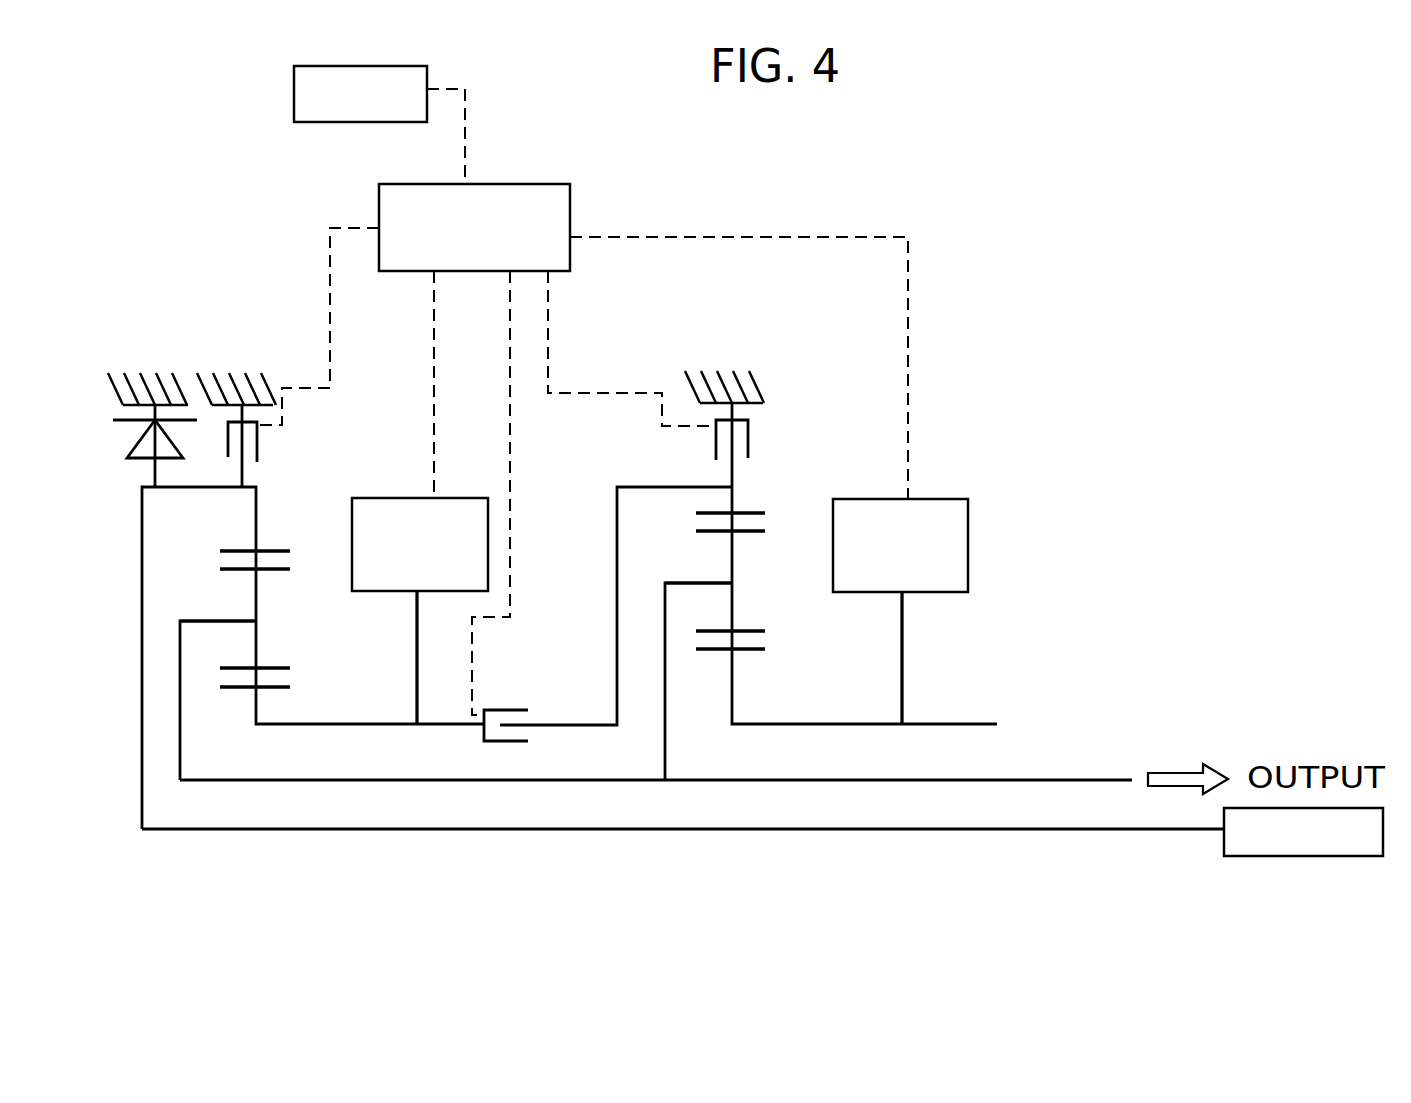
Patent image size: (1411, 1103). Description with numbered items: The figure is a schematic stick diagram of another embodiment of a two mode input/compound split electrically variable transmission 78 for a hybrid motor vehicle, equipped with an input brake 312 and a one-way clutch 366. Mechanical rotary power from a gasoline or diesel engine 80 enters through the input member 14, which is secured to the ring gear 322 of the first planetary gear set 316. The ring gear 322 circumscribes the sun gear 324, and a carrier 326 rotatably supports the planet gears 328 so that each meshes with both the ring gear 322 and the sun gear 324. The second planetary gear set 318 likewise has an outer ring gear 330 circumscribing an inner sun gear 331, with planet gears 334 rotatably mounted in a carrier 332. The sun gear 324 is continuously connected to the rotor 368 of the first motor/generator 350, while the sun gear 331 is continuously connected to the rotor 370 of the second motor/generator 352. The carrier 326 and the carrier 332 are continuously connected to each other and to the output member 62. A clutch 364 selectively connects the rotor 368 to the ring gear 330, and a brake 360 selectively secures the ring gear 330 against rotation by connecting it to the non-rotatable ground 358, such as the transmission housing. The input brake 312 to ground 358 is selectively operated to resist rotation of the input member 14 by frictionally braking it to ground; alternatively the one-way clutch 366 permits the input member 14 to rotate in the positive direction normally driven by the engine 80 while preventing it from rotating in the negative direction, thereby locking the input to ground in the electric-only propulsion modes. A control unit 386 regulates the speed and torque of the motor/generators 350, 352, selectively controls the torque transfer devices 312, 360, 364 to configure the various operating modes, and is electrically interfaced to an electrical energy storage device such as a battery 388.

The input member 14 is at (943, 830).
The output member 62 is at (1062, 779).
The electrically variable transmission 78 is at (1048, 178).
The engine 80 is at (1308, 856).
The input brake 312 is at (260, 452).
The first planetary gear set 316 is at (312, 548).
The second planetary gear set 318 is at (806, 628).
The ring gear 322 is at (262, 548).
The sun gear 324 is at (235, 690).
The carrier 326 is at (205, 621).
The planet gears 328 is at (258, 597).
The ring gear 330 is at (738, 512).
The sun gear 331 is at (740, 652).
The carrier 332 is at (690, 578).
The planet gears 334 is at (733, 552).
The motor/generator 350 is at (420, 544).
The motor/generator 352 is at (900, 545).
The ground 358 is at (183, 380).
The brake 360 is at (716, 453).
The clutch 364 is at (498, 743).
The one-way clutch 366 is at (165, 426).
The rotor 368 is at (417, 643).
The rotor 370 is at (905, 650).
The control unit 386 is at (527, 184).
The battery 388 is at (334, 108).